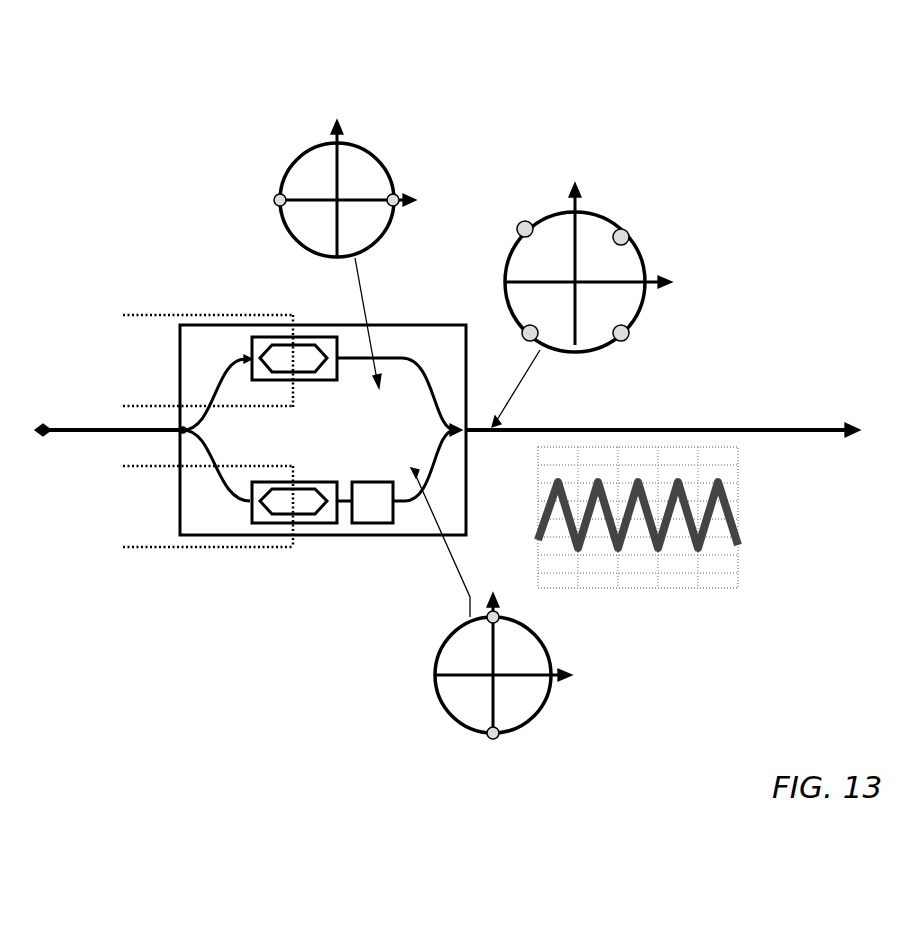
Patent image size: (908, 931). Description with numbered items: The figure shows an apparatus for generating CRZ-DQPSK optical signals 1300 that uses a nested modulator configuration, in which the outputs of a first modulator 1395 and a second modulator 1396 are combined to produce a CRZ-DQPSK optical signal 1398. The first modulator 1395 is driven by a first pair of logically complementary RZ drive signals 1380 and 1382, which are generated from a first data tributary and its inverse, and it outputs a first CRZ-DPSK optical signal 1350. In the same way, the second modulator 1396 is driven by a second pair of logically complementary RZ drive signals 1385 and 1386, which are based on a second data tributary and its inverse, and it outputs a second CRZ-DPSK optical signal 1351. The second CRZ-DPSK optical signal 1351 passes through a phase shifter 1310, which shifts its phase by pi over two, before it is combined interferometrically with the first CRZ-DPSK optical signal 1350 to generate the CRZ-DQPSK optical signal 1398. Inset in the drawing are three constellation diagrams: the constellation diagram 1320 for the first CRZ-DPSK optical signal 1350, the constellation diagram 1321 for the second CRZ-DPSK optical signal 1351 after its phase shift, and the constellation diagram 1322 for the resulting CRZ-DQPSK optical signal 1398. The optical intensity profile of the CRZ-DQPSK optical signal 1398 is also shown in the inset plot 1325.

The apparatus for generating CRZ-DQPSK optical signals 1300 is at (726, 34).
The phase shifter 1310 is at (373, 523).
The constellation diagram 1320 is at (368, 150).
The constellation diagram 1321 is at (533, 713).
The constellation diagram 1322 is at (637, 246).
The inset plot 1325 is at (728, 585).
The first CRZ-DPSK optical signal 1350 is at (411, 355).
The second CRZ-DPSK optical signal 1351 is at (346, 522).
The RZ drive signal 1380 is at (143, 314).
The RZ drive signal 1382 is at (135, 406).
The RZ drive signal 1385 is at (125, 466).
The RZ drive signal 1386 is at (135, 547).
The first modulator 1395 is at (318, 337).
The second modulator 1396 is at (322, 520).
The CRZ-DQPSK optical signal 1398 is at (766, 428).